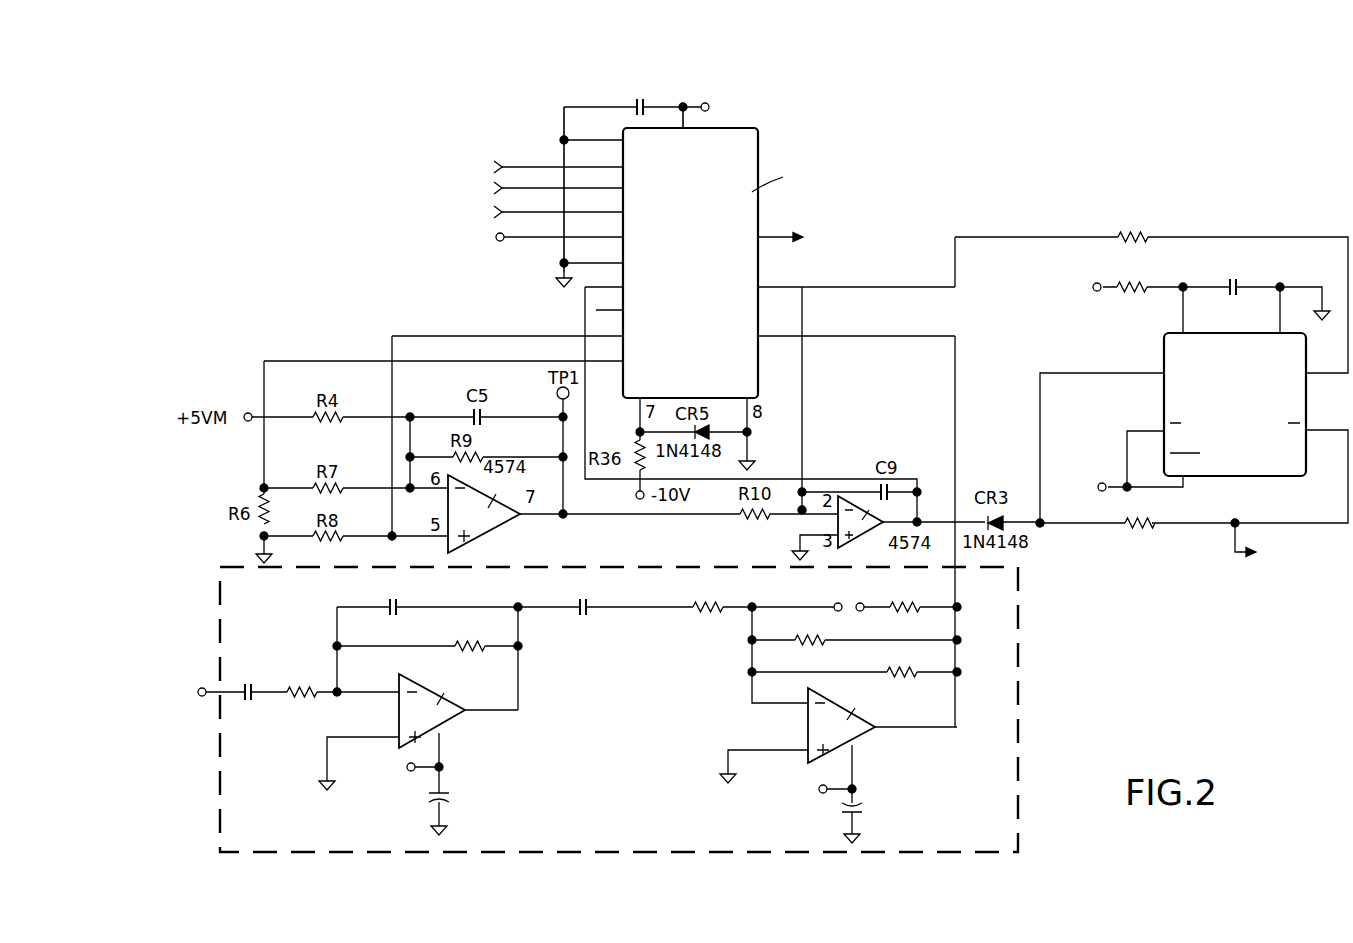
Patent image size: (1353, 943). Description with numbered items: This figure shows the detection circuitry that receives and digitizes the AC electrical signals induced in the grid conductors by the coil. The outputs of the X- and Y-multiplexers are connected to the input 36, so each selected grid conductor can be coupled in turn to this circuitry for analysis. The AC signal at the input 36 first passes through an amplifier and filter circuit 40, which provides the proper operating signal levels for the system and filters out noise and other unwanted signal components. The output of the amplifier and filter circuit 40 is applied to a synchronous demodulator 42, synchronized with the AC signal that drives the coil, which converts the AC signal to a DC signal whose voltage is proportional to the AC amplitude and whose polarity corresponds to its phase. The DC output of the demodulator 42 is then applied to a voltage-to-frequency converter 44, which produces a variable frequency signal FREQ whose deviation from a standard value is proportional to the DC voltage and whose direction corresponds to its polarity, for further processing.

The input 36 is at (199, 696).
The amplifier and filter circuit 40 is at (232, 558).
The synchronous demodulator 42 is at (792, 137).
The voltage-to-frequency converter 44 is at (1120, 355).